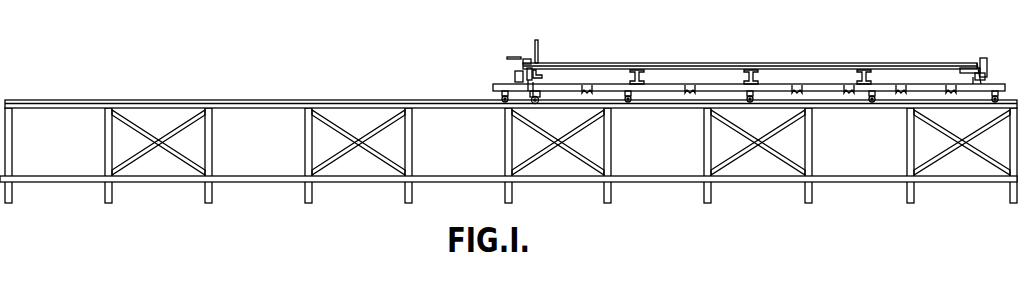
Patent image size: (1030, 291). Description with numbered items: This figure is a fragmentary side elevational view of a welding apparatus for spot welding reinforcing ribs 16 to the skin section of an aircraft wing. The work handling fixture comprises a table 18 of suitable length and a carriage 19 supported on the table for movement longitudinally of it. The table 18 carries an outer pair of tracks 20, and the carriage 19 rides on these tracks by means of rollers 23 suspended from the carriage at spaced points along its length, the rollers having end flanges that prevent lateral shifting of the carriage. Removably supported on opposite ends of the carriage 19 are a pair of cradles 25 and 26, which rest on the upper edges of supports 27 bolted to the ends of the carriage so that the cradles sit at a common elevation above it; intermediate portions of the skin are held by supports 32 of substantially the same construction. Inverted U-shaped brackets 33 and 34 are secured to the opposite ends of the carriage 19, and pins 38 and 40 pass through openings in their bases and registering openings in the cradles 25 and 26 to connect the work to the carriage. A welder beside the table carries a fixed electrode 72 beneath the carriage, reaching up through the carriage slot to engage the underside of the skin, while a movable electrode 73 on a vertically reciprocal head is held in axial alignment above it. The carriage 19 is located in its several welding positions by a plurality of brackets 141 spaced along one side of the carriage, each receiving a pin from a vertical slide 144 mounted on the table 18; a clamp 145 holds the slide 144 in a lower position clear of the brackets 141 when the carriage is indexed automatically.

The reinforcing ribs 16 is at (668, 63).
The table 18 is at (614, 152).
The carriage 19 is at (671, 93).
The outer tracks 20 is at (53, 100).
The rollers 23 is at (626, 102).
The cradle 25 is at (986, 73).
The cradle 26 is at (511, 57).
The supports 27 is at (528, 82).
The supports 32 is at (634, 70).
The inverted U-shaped bracket 33 is at (973, 84).
The inverted U-shaped bracket 34 is at (514, 74).
The pin 38 is at (983, 58).
The pin 40 is at (526, 59).
The fixed electrode 72 is at (543, 76).
The movable electrode 73 is at (539, 55).
The brackets 141 is at (585, 91).
The vertical slide 144 is at (537, 104).
The clamp 145 is at (533, 98).